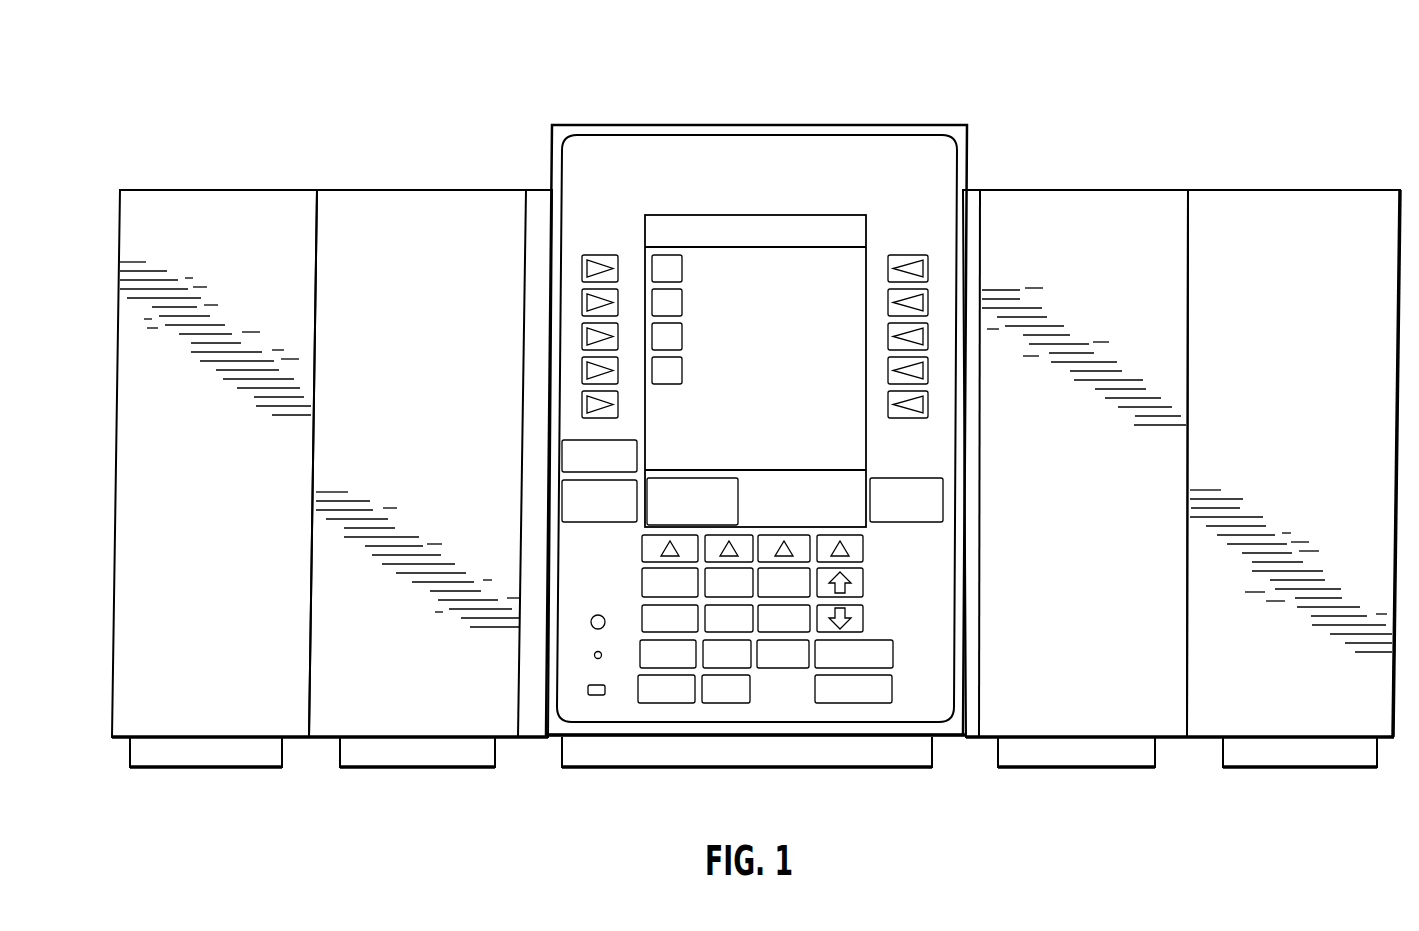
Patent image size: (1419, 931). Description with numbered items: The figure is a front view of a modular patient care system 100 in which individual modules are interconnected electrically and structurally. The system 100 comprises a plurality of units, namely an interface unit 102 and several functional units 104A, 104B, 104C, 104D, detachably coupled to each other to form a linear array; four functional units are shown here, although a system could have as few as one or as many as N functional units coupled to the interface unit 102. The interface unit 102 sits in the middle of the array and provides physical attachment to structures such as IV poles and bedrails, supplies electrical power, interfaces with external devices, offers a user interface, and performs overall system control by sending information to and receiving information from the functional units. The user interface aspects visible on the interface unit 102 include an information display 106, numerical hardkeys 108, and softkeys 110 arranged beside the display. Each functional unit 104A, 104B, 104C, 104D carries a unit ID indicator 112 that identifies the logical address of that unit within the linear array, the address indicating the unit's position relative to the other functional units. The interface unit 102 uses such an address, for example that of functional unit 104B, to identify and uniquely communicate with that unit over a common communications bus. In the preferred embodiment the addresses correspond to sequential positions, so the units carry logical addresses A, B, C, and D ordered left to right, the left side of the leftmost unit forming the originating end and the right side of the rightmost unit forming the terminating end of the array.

The modular patient care system 100 is at (904, 79).
The interface unit 102 is at (730, 122).
The functional unit 104A is at (110, 710).
The functional unit 104B is at (344, 190).
The functional unit 104C is at (1148, 190).
The functional unit 104D is at (1395, 718).
The information display 106 is at (692, 295).
The numerical hardkeys 108 is at (785, 697).
The softkeys 110 is at (582, 267).
The unit ID indicator 112 is at (217, 218).